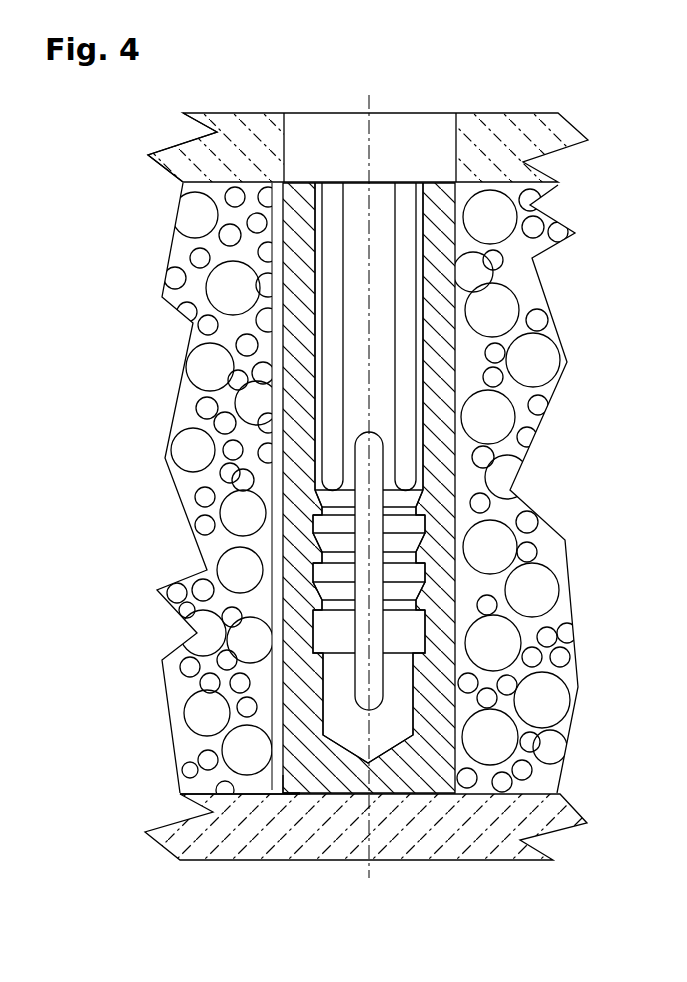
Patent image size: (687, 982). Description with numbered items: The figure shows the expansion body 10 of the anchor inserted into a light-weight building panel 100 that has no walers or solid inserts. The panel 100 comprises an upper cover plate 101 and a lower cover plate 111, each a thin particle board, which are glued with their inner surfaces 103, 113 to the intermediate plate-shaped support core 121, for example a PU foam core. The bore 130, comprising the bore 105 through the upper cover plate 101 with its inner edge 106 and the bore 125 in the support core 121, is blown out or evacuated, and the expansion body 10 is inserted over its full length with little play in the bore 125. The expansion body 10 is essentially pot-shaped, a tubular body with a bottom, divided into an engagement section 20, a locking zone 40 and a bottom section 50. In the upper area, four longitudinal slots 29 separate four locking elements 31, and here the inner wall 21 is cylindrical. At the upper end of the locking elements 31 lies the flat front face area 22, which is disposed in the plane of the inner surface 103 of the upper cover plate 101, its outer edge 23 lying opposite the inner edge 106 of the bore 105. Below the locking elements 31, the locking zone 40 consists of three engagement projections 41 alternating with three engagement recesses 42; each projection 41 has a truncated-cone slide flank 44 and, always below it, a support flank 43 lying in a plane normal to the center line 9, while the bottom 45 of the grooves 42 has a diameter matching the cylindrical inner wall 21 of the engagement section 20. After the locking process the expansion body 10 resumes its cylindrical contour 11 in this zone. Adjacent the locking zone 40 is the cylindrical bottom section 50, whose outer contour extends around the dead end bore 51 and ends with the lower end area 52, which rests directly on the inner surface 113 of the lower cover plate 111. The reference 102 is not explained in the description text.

The light-weight building panel 100 is at (220, 106).
The upper cover plate 101 is at (265, 145).
The fixture plate edge 102 is at (207, 113).
The inner surface of upper cover plate 103 is at (222, 181).
The bore 105 is at (285, 152).
The inner edge of bore 106 is at (410, 212).
The bore 130 is at (457, 105).
The outer edge of front face area 23 is at (448, 187).
The front face area 22 is at (303, 180).
The longitudinal slots 29 is at (332, 217).
The inner wall 21 is at (315, 270).
The engagement section 20 is at (300, 341).
The locking elements 31 is at (300, 368).
The support core 121 is at (202, 387).
The cylindrical contour 11 is at (283, 428).
The expansion body 10 is at (268, 465).
The bore 125 is at (447, 415).
The engagement projections 41 is at (417, 508).
The engagement recesses 42 is at (417, 522).
The bottom of engagement grooves 45 is at (423, 528).
The slide flank 44 is at (417, 545).
The support flank 43 is at (418, 562).
The locking zone 40 is at (288, 588).
The center line 9 is at (370, 640).
The bottom section 50 is at (270, 722).
The lower end area 52 is at (283, 778).
The dead end bore 51 is at (412, 692).
The inner surface of lower cover plate 113 is at (217, 792).
The lower cover plate 111 is at (207, 828).